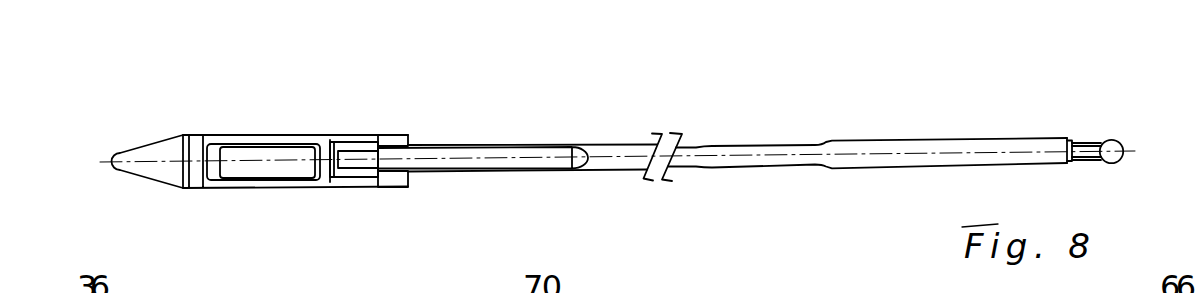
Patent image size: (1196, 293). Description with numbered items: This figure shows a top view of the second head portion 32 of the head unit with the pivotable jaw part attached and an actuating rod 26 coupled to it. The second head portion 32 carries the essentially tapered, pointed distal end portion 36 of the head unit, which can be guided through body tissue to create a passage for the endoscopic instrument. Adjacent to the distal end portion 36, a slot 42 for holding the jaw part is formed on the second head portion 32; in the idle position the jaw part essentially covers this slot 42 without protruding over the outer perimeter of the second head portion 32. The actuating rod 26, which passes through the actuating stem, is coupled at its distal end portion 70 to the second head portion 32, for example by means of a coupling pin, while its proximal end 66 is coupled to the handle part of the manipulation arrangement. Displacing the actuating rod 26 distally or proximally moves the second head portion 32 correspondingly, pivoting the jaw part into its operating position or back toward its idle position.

The actuating rod 26 is at (692, 145).
The second head portion 32 is at (340, 132).
The distal end portion 36 is at (136, 132).
The slot 42 is at (248, 155).
The proximal end 66 is at (1110, 113).
The distal end portion 70 is at (441, 126).